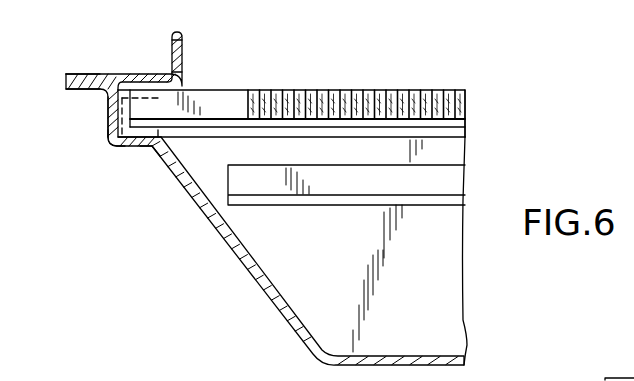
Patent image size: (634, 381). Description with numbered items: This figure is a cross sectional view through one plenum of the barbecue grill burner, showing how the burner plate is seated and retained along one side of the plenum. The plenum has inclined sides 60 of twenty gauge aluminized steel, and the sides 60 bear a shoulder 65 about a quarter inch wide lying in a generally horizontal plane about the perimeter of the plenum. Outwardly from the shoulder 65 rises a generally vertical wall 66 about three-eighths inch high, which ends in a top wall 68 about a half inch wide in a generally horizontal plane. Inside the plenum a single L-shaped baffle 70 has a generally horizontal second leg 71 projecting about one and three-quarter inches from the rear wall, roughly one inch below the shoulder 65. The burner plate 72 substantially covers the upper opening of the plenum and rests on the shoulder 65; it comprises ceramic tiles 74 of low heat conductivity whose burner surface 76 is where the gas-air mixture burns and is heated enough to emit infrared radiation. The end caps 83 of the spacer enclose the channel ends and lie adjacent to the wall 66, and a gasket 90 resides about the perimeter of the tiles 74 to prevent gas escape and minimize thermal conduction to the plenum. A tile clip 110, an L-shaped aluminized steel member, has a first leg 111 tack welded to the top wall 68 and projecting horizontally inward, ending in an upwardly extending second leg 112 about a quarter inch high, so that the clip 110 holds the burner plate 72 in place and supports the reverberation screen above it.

The sides 60 is at (287, 325).
The shoulder 65 is at (153, 148).
The vertical walls 66 is at (110, 126).
The top wall 68 is at (82, 90).
The baffle 70 is at (423, 207).
The second leg 71 is at (313, 199).
The burner plate 72 is at (238, 90).
The tile 74 is at (467, 102).
The burner surface 76 is at (380, 88).
The end caps 83 is at (127, 150).
The gasket 90 is at (108, 107).
The tile clip 110 is at (118, 72).
The first leg 111 is at (72, 73).
The second leg 112 is at (185, 50).